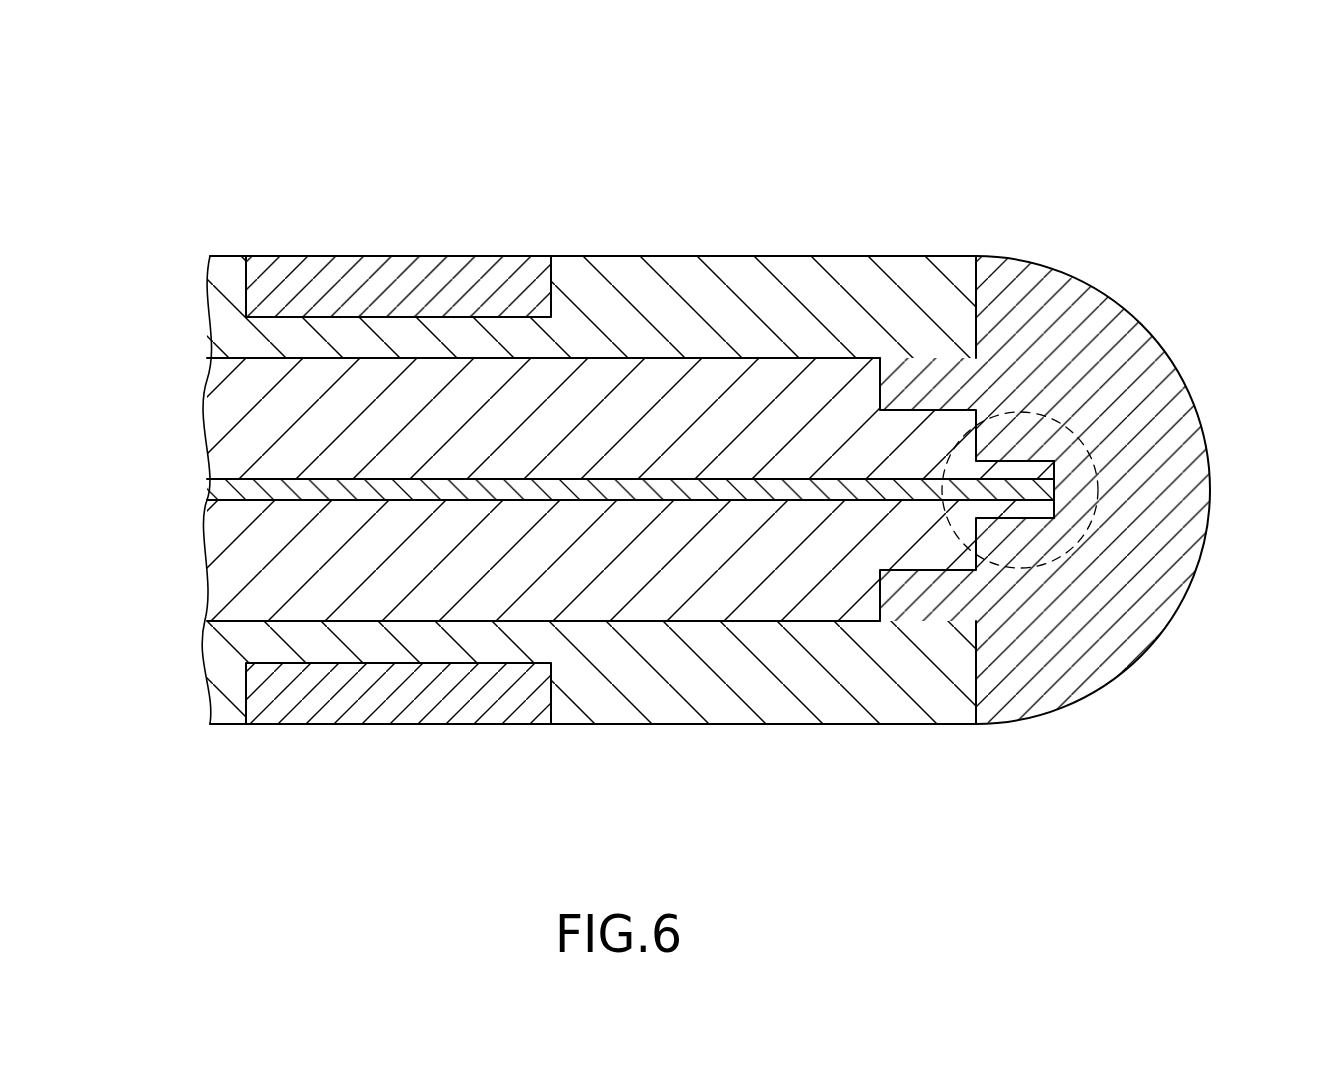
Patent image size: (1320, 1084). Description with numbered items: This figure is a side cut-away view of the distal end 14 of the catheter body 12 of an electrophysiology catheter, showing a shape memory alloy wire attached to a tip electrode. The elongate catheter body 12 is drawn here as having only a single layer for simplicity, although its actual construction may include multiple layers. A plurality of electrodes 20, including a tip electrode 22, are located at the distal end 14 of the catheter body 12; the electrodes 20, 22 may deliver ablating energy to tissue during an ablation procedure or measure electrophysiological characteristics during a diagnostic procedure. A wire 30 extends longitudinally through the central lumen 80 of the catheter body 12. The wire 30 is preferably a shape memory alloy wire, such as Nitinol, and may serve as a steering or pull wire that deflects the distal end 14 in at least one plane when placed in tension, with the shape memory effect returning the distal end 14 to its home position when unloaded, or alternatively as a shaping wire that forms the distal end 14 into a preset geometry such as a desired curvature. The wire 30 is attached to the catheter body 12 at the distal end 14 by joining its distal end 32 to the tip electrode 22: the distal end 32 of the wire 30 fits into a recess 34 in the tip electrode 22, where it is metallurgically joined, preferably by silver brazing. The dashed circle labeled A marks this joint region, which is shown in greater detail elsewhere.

The distal end 14 is at (357, 178).
The catheter body 12 is at (727, 685).
The electrodes 20 is at (370, 705).
The central lumen 80 is at (525, 429).
The wire 30 is at (226, 493).
The distal end of wire 32 is at (1012, 488).
The recess 34 is at (1020, 468).
The tip electrode 22 is at (1160, 440).
The detail region A is at (1063, 568).